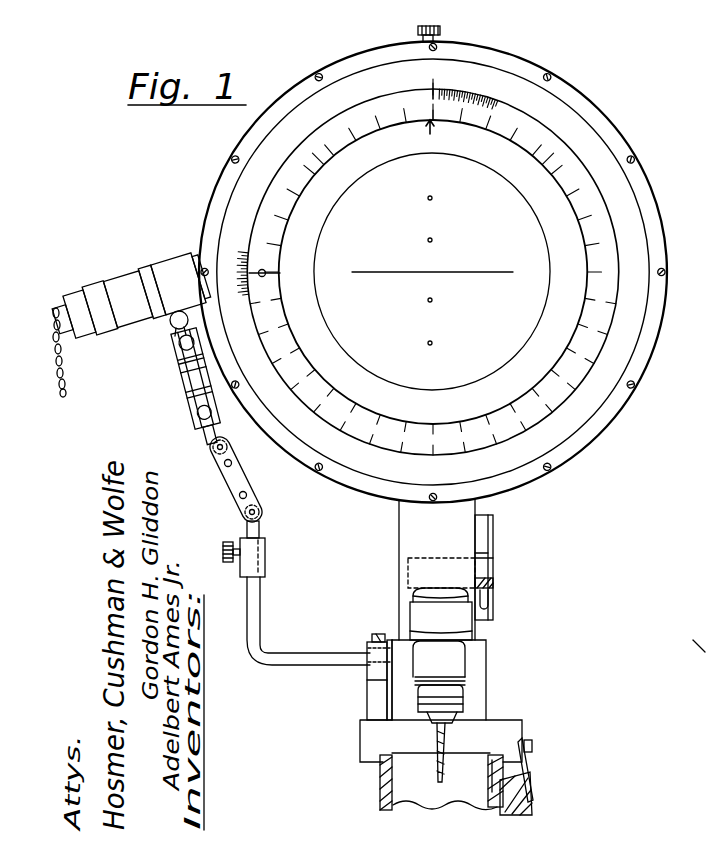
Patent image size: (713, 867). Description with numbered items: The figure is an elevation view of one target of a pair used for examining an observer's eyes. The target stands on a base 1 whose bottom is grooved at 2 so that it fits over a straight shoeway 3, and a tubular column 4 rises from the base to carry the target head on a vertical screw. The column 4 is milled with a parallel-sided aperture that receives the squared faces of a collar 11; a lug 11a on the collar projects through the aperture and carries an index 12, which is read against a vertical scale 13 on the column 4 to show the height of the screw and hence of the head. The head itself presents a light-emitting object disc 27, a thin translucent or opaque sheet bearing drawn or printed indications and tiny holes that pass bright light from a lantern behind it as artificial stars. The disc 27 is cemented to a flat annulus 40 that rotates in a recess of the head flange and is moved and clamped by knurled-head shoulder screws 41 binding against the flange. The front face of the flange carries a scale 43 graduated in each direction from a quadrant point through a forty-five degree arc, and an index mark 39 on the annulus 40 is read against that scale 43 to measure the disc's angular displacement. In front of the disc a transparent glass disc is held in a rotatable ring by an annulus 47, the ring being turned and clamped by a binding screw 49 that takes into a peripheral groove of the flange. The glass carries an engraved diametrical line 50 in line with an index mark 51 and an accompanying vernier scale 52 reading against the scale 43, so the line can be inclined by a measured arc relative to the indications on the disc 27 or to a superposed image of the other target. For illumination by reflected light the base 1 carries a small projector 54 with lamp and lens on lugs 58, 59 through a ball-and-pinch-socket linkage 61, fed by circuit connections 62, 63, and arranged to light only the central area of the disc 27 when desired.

The base 1 is at (498, 720).
The groove 2 is at (497, 740).
The shoeway 3 is at (383, 795).
The tubular column 4 is at (399, 550).
The collar 11 is at (497, 548).
The lug 11a is at (482, 608).
The index 12 is at (487, 578).
The vertical scale 13 is at (493, 528).
The object disc 27 is at (527, 305).
The index mark 39 is at (410, 134).
The annulus 40 is at (613, 178).
The knurled-head shoulder screw 41 is at (638, 260).
The scale 43 is at (613, 253).
The annulus 47 is at (600, 117).
The binding screw 49 is at (442, 31).
The diametrical line 50 is at (389, 273).
The index mark 51 is at (252, 274).
The vernier scale 52 is at (175, 270).
The projector 54 is at (165, 262).
The lug 58 is at (368, 686).
The lug 59 is at (703, 637).
The ball-and-pinch-socket linkage 61 is at (185, 385).
The circuit connection 62 is at (64, 362).
The circuit connection 63 is at (430, 760).